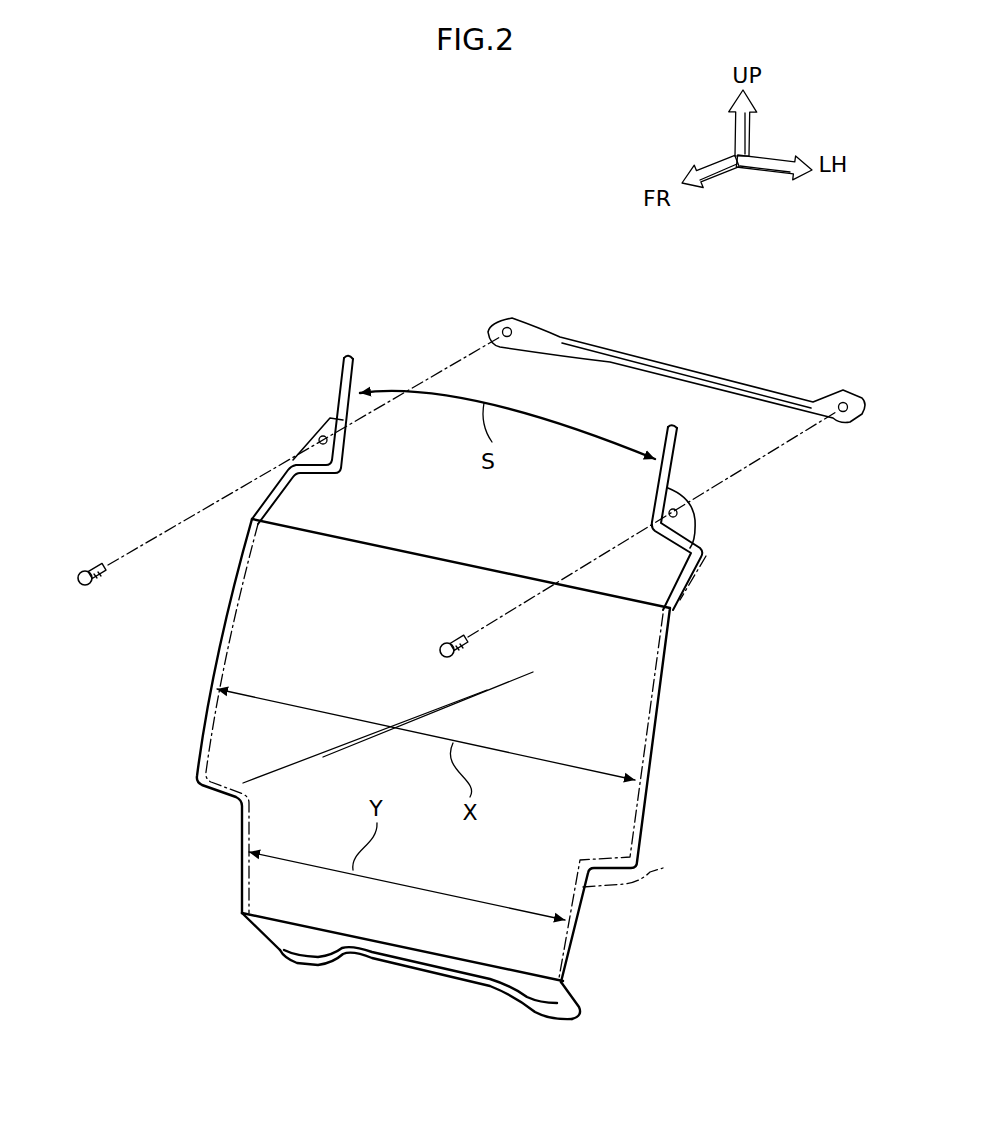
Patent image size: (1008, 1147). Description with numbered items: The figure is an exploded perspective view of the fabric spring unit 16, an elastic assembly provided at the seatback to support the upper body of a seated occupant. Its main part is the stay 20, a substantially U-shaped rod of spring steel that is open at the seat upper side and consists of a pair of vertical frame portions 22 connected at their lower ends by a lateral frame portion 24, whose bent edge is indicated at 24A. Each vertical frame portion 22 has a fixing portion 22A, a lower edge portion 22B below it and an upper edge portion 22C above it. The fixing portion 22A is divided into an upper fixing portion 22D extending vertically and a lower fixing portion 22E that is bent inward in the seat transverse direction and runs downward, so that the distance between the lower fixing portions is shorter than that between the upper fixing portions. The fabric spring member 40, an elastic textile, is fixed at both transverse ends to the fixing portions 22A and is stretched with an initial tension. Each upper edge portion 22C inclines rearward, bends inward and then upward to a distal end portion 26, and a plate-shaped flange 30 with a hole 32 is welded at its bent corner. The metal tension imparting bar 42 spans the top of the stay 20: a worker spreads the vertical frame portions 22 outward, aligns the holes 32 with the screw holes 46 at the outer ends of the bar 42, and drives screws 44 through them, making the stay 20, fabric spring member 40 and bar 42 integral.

The fabric spring unit 16 is at (436, 288).
The stay 20 is at (676, 688).
The vertical frame portions 22 is at (222, 640).
The fixing portion 22A is at (808, 764).
The lower edge portion 22B is at (567, 996).
The upper edge portion 22C is at (690, 577).
The upper fixing portion 22D is at (652, 763).
The lower fixing portion 22E is at (585, 885).
The lateral frame portion 24 is at (374, 962).
The bent edge portion 24A is at (300, 964).
The distal end portion 26 is at (343, 375).
The flange 30 is at (316, 432).
The hole 32 is at (340, 455).
The fabric spring member 40 is at (410, 907).
The tension imparting bar 42 is at (641, 358).
The screw 44 is at (80, 571).
The screw hole 46 is at (508, 318).